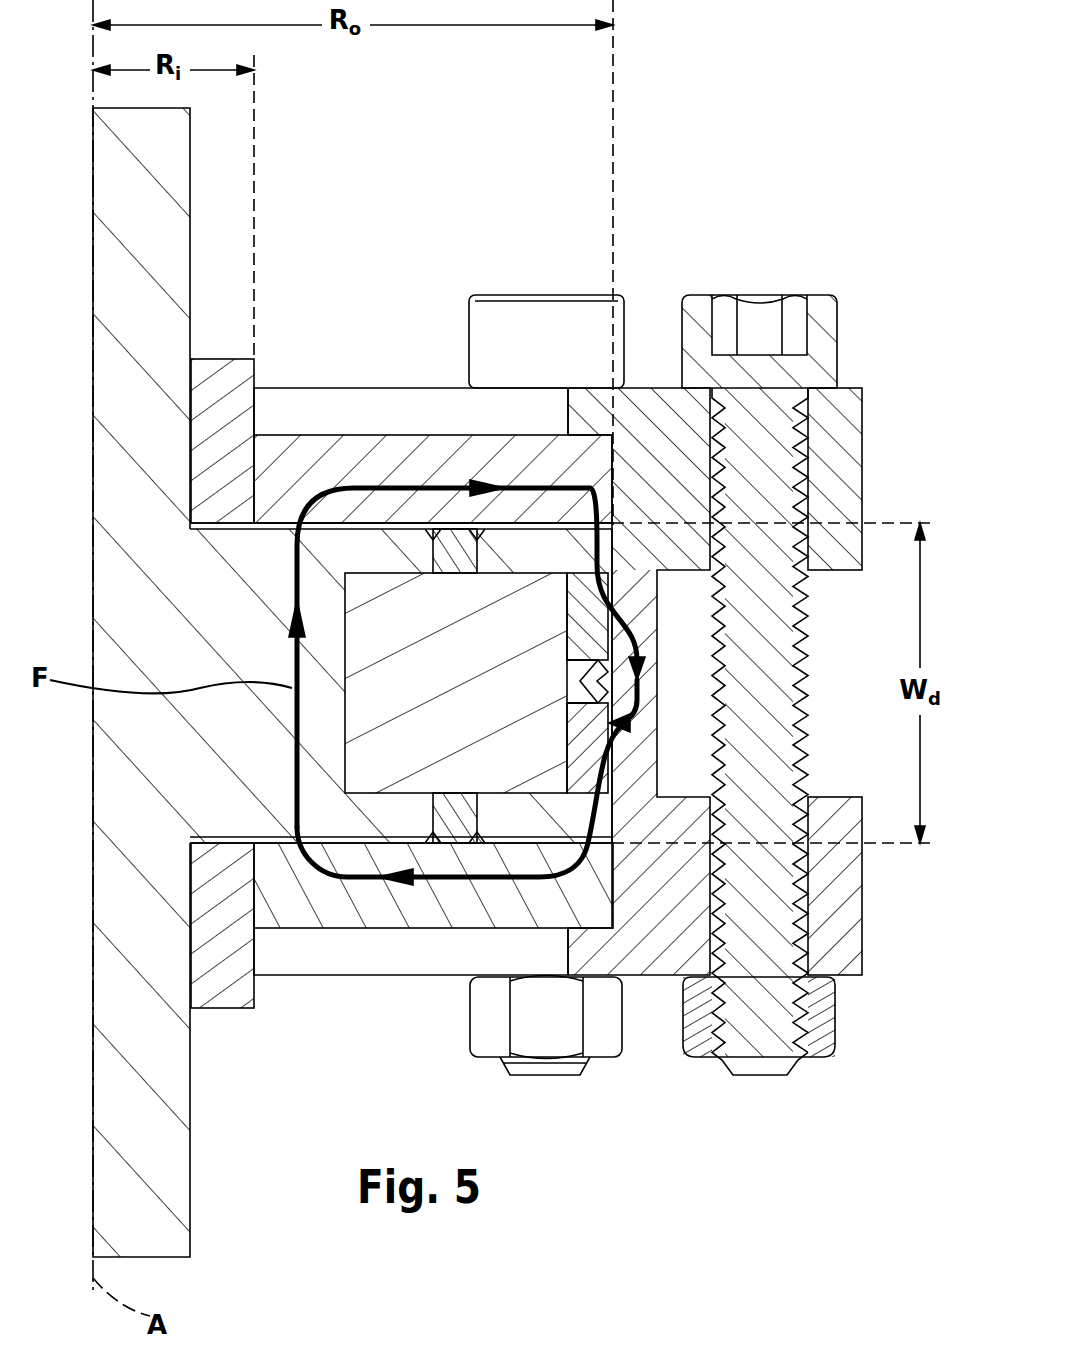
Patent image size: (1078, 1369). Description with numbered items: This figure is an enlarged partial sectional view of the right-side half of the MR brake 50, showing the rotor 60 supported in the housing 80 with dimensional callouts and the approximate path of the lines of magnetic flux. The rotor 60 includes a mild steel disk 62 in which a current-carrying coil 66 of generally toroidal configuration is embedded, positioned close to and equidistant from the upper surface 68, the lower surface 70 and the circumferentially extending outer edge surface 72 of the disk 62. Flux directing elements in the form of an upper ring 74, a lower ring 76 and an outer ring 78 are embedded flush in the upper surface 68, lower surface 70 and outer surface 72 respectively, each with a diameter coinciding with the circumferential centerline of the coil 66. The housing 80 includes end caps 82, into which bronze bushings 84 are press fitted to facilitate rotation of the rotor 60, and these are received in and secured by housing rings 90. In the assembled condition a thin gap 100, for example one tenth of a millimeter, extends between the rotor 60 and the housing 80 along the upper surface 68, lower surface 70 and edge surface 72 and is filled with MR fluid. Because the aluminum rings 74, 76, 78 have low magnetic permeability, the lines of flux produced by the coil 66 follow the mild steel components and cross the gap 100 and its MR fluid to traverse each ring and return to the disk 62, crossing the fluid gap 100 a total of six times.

The MR brake 50 is at (775, 82).
The rotor 60 is at (170, 568).
The disk 62 is at (250, 812).
The current-carrying coil 66 is at (408, 753).
The upper surface of the disk 68 is at (525, 512).
The lower surface of the disk 70 is at (528, 860).
The outer edge surface of the disk 72 is at (615, 714).
The upper ring 74 is at (457, 548).
The lower ring 76 is at (455, 812).
The outer ring 78 is at (600, 656).
The housing 80 is at (838, 455).
The end caps 82 is at (372, 465).
The bushings 84 is at (596, 690).
The housing rings 90 is at (835, 415).
The gap 100 is at (283, 527).